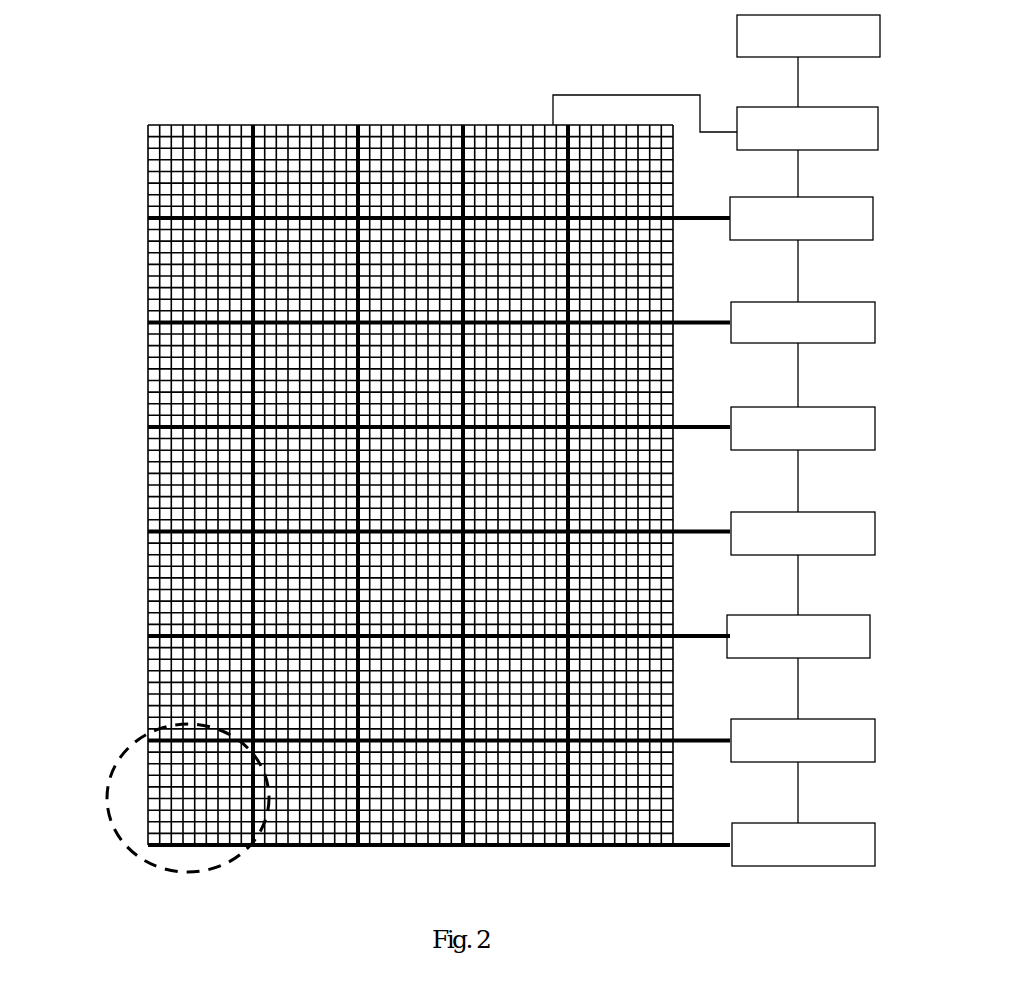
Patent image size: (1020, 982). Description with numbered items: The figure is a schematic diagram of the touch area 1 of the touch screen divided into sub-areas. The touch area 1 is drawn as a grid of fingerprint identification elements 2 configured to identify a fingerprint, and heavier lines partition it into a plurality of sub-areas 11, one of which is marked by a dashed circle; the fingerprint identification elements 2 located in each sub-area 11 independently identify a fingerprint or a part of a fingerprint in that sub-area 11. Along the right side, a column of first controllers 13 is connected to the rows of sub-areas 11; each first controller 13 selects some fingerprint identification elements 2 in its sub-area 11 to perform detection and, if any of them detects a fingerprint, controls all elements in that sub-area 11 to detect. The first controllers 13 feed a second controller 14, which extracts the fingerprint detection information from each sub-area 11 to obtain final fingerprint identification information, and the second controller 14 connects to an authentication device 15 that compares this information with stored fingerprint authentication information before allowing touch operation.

The touch area 1 is at (509, 125).
The fingerprint identification element 2 is at (205, 158).
The sub-area 11 is at (113, 787).
The first controller 13 is at (801, 531).
The second controller 14 is at (715, 146).
The authentication device 15 is at (808, 61).